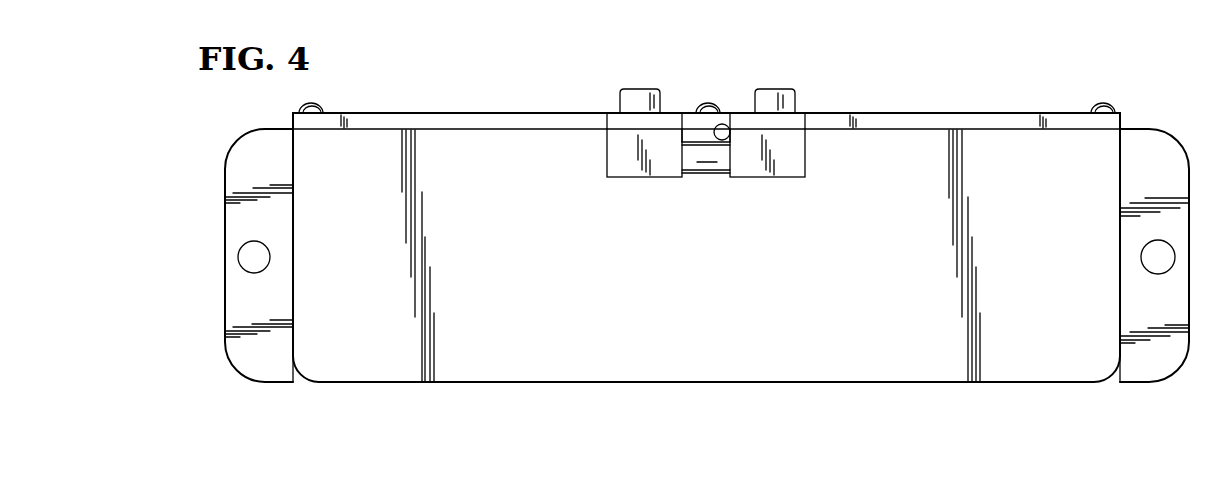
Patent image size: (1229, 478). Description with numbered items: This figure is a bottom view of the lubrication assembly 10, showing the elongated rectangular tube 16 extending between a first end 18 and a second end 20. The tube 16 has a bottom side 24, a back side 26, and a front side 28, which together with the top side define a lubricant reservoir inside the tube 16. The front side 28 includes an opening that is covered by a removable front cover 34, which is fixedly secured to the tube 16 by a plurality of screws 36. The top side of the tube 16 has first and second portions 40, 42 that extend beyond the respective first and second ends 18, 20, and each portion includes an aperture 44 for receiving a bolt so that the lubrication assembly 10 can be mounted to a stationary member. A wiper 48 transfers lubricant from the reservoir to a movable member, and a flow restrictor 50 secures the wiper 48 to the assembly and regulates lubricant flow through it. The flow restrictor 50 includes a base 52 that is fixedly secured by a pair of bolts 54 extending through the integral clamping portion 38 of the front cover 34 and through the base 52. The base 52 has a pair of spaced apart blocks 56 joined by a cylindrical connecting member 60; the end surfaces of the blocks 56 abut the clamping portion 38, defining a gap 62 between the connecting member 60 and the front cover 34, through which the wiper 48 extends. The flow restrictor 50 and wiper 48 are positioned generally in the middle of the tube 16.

The lubrication assembly 10 is at (1152, 91).
The elongated rectangular tube 16 is at (362, 383).
The first end 18 is at (293, 170).
The second end 20 is at (1120, 168).
The bottom side 24 is at (846, 323).
The back side 26 is at (465, 383).
The front side 28 is at (497, 114).
The removable front cover 34 is at (990, 115).
The screws 36 is at (312, 104).
The clamping portion 38 is at (615, 122).
The first portion 40 is at (229, 300).
The second portion 42 is at (1181, 310).
The aperture 44 is at (246, 256).
The wiper 48 is at (691, 135).
The flow restrictor 50 is at (833, 83).
The base 52 is at (609, 183).
The bolts 54 is at (637, 100).
The blocks 56 is at (630, 172).
The cylindrical connecting member 60 is at (715, 163).
The gap 62 is at (728, 125).